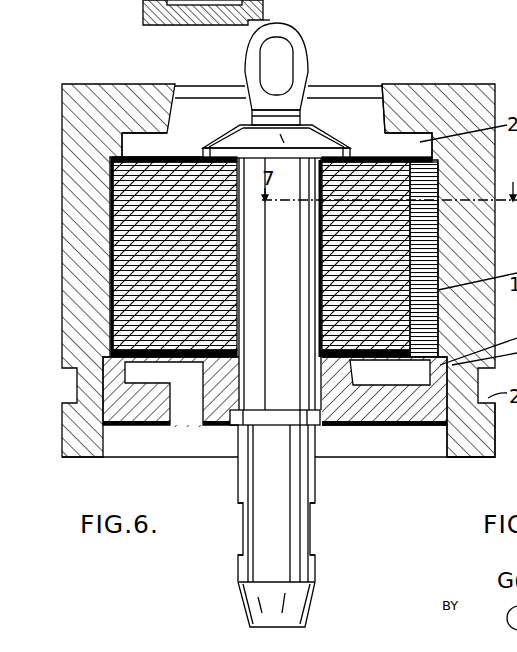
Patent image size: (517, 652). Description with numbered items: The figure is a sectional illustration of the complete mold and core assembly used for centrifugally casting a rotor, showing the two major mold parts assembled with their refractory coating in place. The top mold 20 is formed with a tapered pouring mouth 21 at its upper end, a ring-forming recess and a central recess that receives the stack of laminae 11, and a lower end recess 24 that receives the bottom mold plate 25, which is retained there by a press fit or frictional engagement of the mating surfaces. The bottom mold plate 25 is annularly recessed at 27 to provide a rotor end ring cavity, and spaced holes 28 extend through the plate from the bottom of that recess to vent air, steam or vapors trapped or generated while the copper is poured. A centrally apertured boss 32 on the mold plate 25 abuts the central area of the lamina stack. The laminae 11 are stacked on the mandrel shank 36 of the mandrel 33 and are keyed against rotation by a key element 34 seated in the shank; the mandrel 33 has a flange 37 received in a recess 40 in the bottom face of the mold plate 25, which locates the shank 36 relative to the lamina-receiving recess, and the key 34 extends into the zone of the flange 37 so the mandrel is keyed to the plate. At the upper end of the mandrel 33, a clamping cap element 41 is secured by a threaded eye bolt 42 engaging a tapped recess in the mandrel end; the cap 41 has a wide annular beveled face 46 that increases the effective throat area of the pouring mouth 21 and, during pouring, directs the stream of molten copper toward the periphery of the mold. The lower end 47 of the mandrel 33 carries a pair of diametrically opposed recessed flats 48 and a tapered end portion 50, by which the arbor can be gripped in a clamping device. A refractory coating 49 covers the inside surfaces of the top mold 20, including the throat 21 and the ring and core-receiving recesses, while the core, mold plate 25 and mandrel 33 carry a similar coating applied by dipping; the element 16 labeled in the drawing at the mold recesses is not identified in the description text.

The laminae 11 is at (148, 243).
The recess 16 is at (398, 162).
The top mold 20 is at (452, 98).
The pouring mouth 21 is at (381, 104).
The lower end recess 24 is at (448, 443).
The bottom mold plate 25 is at (386, 413).
The annular recess 27 is at (278, 448).
The spaced holes 28 is at (181, 414).
The boss 32 is at (356, 427).
The mandrel 33 is at (252, 476).
The key element 34 is at (318, 263).
The mandrel shank 36 is at (279, 311).
The flange 37 is at (270, 417).
The recess 40 is at (236, 424).
The clamping cap element 41 is at (304, 136).
The threaded eye bolt 42 is at (296, 47).
The annular beveled face 46 is at (332, 137).
The lower end 47 is at (316, 573).
The recessed flats 48 is at (243, 537).
The refractory coating 49 is at (160, 142).
The tapered end portion 50 is at (247, 608).